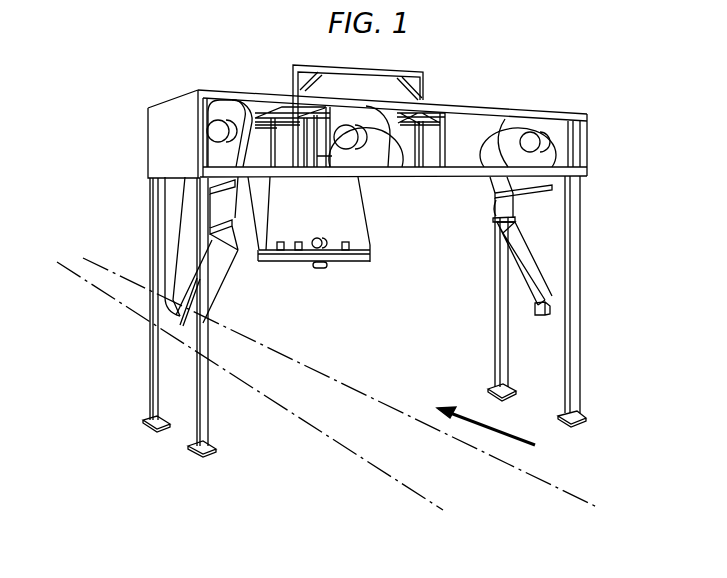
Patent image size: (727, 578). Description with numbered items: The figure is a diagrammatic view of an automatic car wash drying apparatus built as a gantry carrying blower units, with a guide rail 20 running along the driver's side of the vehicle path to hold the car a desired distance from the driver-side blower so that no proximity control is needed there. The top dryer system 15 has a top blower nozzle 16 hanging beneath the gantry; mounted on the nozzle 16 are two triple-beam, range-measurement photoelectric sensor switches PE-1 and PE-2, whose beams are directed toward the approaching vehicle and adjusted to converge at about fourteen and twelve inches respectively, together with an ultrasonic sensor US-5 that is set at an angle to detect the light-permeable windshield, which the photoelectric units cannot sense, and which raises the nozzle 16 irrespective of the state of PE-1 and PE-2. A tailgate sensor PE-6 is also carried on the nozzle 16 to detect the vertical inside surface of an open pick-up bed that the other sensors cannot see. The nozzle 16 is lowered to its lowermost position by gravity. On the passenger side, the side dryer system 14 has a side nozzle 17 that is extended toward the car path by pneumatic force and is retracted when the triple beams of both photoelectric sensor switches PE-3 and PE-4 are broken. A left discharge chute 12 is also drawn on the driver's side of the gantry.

The left discharge chute 12 is at (222, 297).
The side dryer system 14 is at (523, 128).
The top dryer system 15 is at (388, 153).
The top blower nozzle 16 is at (335, 255).
The side nozzle 17 is at (513, 258).
The guide rail 20 is at (358, 408).
The ultrasonic sensor US-5 is at (278, 252).
The tailgate sensor PE-6 is at (297, 252).
The photoelectric sensor switch PE-2 is at (350, 246).
The photoelectric sensor switch PE-1 is at (348, 252).
The photoelectric sensor switch PE-3 is at (535, 309).
The photoelectric sensor switch PE-4 is at (550, 316).